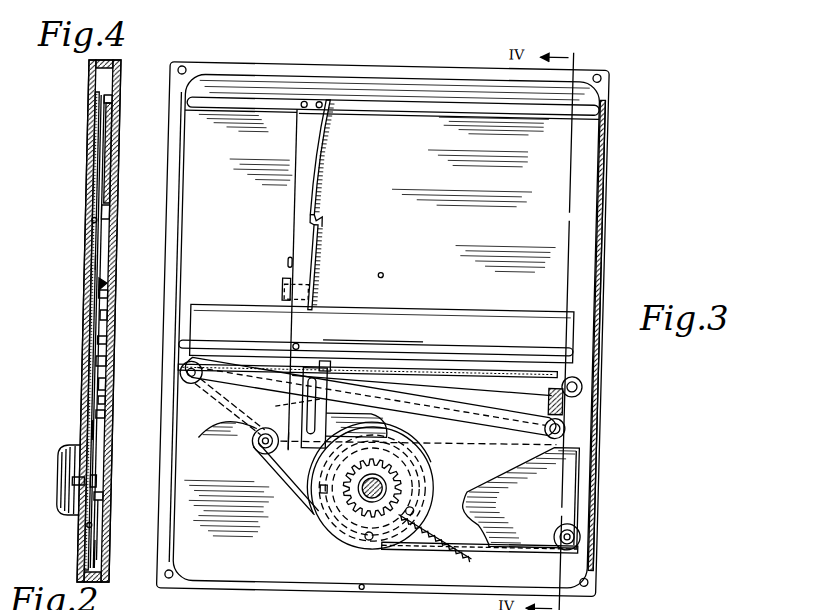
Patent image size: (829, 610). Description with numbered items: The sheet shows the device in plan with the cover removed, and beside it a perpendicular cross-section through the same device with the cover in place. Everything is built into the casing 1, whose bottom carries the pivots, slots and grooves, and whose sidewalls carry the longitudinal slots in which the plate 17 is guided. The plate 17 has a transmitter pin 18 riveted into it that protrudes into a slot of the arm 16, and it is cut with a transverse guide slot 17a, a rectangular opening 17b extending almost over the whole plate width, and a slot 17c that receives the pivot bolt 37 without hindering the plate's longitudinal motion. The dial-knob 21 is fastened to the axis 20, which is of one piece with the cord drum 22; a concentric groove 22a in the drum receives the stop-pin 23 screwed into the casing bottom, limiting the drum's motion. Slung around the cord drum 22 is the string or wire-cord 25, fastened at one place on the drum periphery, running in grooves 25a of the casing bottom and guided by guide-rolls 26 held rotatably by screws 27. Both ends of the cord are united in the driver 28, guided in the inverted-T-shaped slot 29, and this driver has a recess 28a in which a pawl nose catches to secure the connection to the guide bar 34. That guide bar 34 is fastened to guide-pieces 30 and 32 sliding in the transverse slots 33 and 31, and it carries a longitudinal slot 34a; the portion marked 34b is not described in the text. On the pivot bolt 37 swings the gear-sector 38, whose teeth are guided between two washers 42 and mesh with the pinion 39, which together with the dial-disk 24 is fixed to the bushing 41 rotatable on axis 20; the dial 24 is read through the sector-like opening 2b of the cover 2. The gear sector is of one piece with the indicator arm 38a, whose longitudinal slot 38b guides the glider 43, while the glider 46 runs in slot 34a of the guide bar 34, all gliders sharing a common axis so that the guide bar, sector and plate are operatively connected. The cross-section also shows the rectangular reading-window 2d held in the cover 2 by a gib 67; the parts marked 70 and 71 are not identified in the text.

In FIG. 4, the casing 1 is at (119, 66).
In FIG. 3, the casing 1 is at (590, 72).
In FIG. 4, the cover 2 is at (97, 330).
In FIG. 4, the sector-like opening 2b is at (96, 428).
In FIG. 4, the rectangular reading-window 2d is at (94, 262).
In FIG. 4, the arm 16 is at (114, 294).
In FIG. 4, the plate 17 is at (113, 210).
In FIG. 4, the transverse guide slot 17a is at (113, 385).
In FIG. 3, the transverse guide slot 17a is at (496, 372).
In FIG. 4, the rectangular opening 17b is at (114, 316).
In FIG. 4, the slot 17c is at (113, 400).
In FIG. 3, the slot 17c is at (562, 381).
In FIG. 4, the transmitter pin 18 is at (114, 286).
In FIG. 3, the transmitter pin 18 is at (388, 268).
In FIG. 4, the axis 20 is at (96, 482).
In FIG. 3, the axis 20 is at (355, 528).
In FIG. 4, the dial-knob 21 is at (72, 448).
In FIG. 4, the cord drum 22 is at (110, 524).
In FIG. 3, the cord drum 22 is at (335, 516).
In FIG. 3, the concentric groove 22a is at (333, 495).
In FIG. 3, the stop-pin 23 is at (382, 537).
In FIG. 4, the dial-disk 24 is at (98, 528).
In FIG. 3, the string or wire-cord 25 is at (306, 450).
In FIG. 3, the grooves 25a is at (522, 545).
In FIG. 3, the guide-rolls 26 is at (200, 384).
In FIG. 3, the screws 27 is at (262, 440).
In FIG. 4, the driver 28 is at (113, 362).
In FIG. 3, the driver 28 is at (350, 362).
In FIG. 3, the recess 28a is at (331, 358).
In FIG. 3, the slot 29 is at (448, 341).
In FIG. 4, the guide-piece 30 is at (113, 100).
In FIG. 3, the guide-piece 30 is at (350, 108).
In FIG. 3, the slot 31 is at (404, 340).
In FIG. 4, the guide-piece 32 is at (113, 341).
In FIG. 3, the guide-piece 32 is at (349, 341).
In FIG. 3, the slot 33 is at (465, 108).
In FIG. 4, the guide bar 34 is at (108, 137).
In FIG. 3, the guide bar 34 is at (305, 176).
In FIG. 3, the longitudinal slot 34a is at (308, 446).
In FIG. 3, the scale notch 34b is at (323, 215).
In FIG. 4, the pivot bolt 37 is at (113, 415).
In FIG. 3, the pivot bolt 37 is at (572, 444).
In FIG. 4, the gear-sector 38 is at (105, 562).
In FIG. 3, the gear-sector 38 is at (446, 533).
In FIG. 3, the indicator arm 38a is at (227, 405).
In FIG. 3, the longitudinal slot 38b is at (440, 416).
In FIG. 3, the pinion 39 is at (380, 496).
In FIG. 4, the bushing 41 is at (106, 481).
In FIG. 3, the bushing 41 is at (397, 488).
In FIG. 4, the washers 42 is at (112, 507).
In FIG. 3, the washers 42 is at (425, 506).
In FIG. 3, the glider 43 is at (338, 410).
In FIG. 3, the glider 46 is at (302, 400).
In FIG. 4, the gib 67 is at (96, 221).
In FIG. 3, the block 70 is at (288, 290).
In FIG. 3, the pin 71 is at (292, 268).